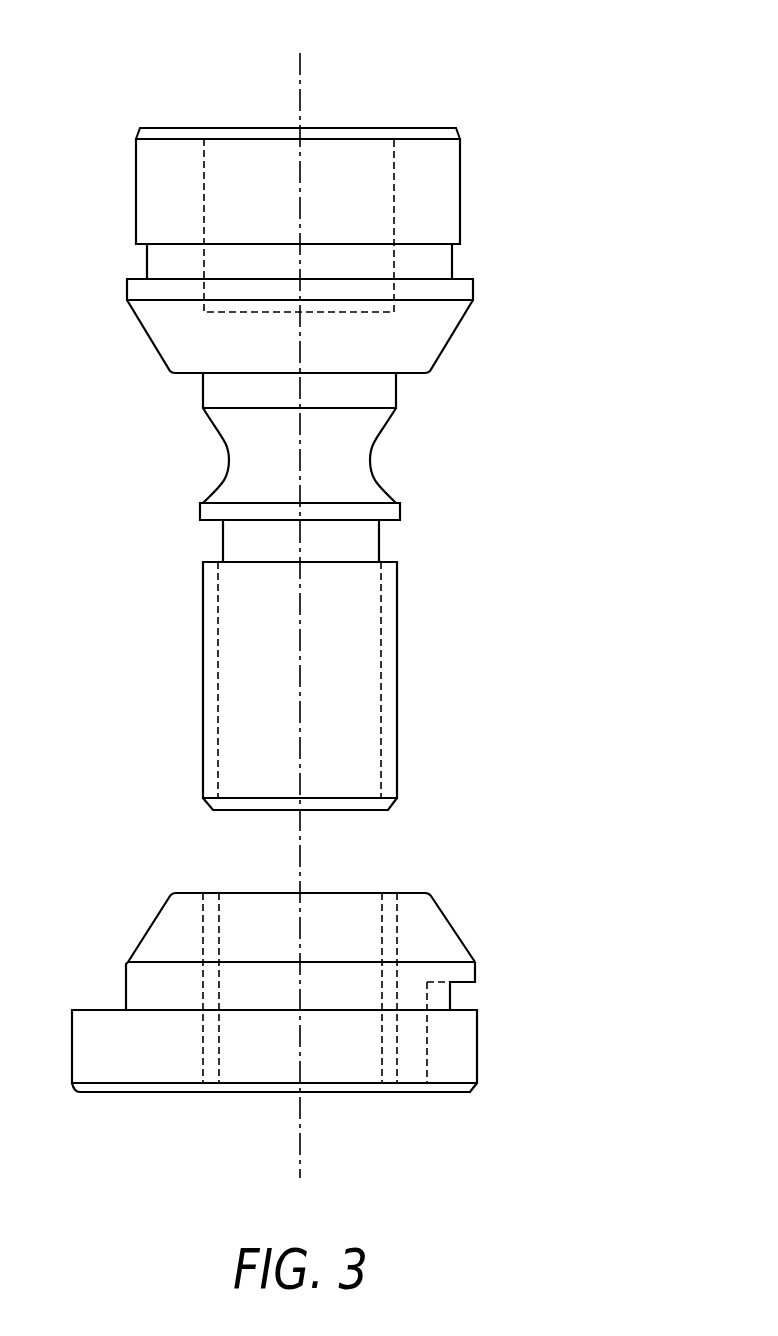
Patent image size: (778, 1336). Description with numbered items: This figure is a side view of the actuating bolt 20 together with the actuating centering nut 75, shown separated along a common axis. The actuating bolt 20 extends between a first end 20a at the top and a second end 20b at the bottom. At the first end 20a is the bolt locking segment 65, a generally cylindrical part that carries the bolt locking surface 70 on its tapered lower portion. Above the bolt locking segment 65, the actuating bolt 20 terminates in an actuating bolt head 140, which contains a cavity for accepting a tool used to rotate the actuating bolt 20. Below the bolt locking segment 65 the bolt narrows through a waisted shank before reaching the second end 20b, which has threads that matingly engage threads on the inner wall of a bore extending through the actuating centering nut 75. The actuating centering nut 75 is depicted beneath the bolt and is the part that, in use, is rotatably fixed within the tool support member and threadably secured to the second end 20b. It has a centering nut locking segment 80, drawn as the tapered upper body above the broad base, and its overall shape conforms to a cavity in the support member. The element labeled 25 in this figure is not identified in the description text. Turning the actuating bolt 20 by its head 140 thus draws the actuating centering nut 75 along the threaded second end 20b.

The first end 20a is at (624, 160).
The second end 20b is at (449, 767).
The actuating bolt head 140 is at (165, 139).
The bolt locking segment 65 is at (448, 172).
The bolt locking surface 70 is at (158, 321).
The actuating bolt 20 is at (438, 318).
The tapered seat member 25 is at (433, 932).
The centering nut locking segment 80 is at (135, 994).
The actuating centering nut 75 is at (465, 1047).